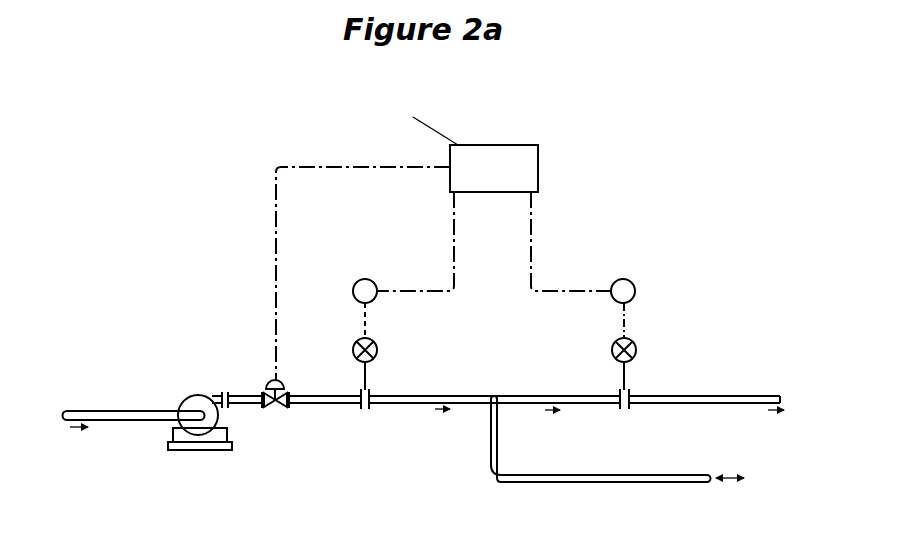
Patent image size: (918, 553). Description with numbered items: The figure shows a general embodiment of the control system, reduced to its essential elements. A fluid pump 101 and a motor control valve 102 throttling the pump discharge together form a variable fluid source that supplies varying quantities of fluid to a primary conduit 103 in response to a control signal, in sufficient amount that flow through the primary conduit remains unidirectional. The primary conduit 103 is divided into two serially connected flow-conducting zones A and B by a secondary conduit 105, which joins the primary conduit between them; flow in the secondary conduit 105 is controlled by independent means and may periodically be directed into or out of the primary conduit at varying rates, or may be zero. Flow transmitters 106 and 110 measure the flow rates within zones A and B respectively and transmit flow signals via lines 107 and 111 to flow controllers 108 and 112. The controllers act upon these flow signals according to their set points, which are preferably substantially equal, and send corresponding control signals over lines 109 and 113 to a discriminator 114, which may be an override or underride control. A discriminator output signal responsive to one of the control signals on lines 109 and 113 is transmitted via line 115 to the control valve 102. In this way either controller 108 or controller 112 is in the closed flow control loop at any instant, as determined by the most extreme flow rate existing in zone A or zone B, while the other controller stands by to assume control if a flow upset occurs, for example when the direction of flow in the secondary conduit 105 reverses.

The fluid pump 101 is at (196, 396).
The motor control valve 102 is at (275, 405).
The primary conduit 103 is at (702, 396).
The secondary conduit 105 is at (604, 475).
The flow transmitter 106 is at (356, 340).
The flow signal line 107 is at (367, 331).
The flow controller 108 is at (355, 283).
The control signal line 109 is at (453, 245).
The flow transmitter 110 is at (636, 340).
The flow signal line 111 is at (618, 332).
The flow controller 112 is at (633, 284).
The control signal line 113 is at (536, 250).
The discriminator 114 is at (538, 170).
The discriminator output line 115 is at (275, 278).
The flow-conducting zone A is at (406, 396).
The flow-conducting zone B is at (527, 397).